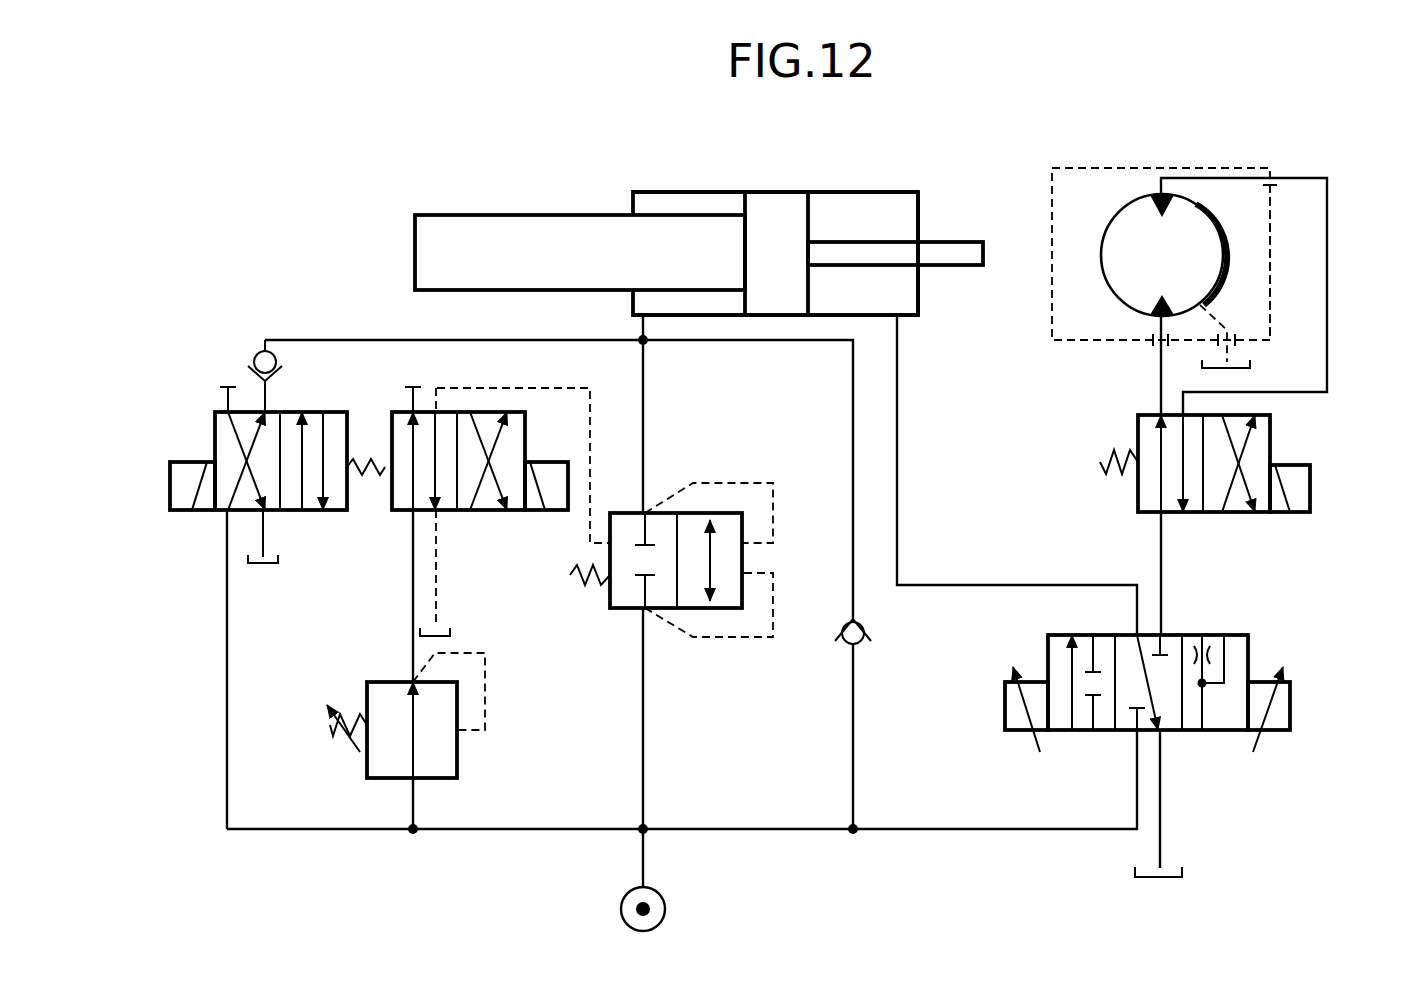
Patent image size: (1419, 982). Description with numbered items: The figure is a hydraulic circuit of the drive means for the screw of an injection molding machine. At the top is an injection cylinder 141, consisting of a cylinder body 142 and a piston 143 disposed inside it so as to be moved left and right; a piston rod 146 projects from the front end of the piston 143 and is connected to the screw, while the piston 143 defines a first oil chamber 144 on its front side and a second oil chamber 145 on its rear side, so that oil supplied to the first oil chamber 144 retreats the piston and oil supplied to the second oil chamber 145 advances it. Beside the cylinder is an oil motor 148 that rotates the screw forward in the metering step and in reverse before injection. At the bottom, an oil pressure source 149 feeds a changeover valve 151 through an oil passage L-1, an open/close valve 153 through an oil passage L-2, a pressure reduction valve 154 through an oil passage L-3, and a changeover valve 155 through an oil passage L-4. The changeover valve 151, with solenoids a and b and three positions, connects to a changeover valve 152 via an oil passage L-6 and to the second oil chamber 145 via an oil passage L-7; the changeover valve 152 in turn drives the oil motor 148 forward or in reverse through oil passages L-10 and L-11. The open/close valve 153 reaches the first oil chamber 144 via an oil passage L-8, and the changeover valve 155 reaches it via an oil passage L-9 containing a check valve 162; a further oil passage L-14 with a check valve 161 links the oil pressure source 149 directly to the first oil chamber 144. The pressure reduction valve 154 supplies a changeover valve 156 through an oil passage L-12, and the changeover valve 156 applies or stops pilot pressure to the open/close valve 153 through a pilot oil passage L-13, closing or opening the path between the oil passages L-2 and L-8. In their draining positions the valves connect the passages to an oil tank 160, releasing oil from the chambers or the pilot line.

The injection cylinder 141 is at (709, 219).
The cylinder body 142 is at (905, 190).
The piston 143 is at (762, 210).
The first oil chamber 144 is at (658, 203).
The second oil chamber 145 is at (898, 216).
The piston rod 146 is at (473, 215).
The oil motor 148 is at (1052, 235).
The oil pressure source 149 is at (656, 893).
The changeover valve 151 is at (1252, 627).
The changeover valve 152 is at (1303, 450).
The open/close valve 153 is at (630, 613).
The pressure reduction valve 154 is at (393, 682).
The changeover valve 155 is at (220, 513).
The changeover valve 156 is at (403, 515).
The oil tank 160 is at (265, 565).
The check valve 161 is at (867, 623).
The check valve 162 is at (257, 350).
The oil passage L-1 is at (963, 828).
The oil passage L-2 is at (643, 733).
The oil passage L-3 is at (415, 800).
The oil passage L-4 is at (228, 800).
The oil passage L-6 is at (1158, 535).
The oil passage L-7 is at (897, 465).
The oil passage L-8 is at (645, 412).
The oil passage L-9 is at (390, 340).
The oil passage L-10 is at (1162, 358).
The oil passage L-11 is at (1327, 277).
The oil passage L-12 is at (415, 533).
The pilot oil passage L-13 is at (483, 388).
The oil passage L-14 is at (853, 778).